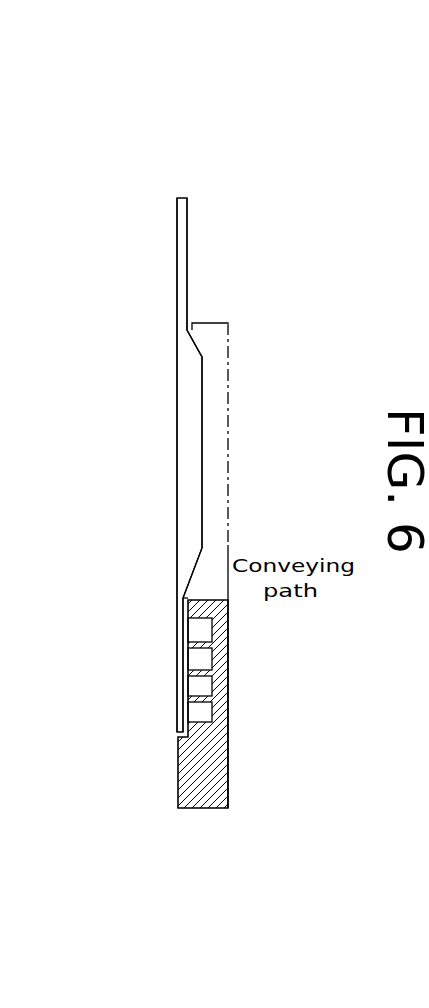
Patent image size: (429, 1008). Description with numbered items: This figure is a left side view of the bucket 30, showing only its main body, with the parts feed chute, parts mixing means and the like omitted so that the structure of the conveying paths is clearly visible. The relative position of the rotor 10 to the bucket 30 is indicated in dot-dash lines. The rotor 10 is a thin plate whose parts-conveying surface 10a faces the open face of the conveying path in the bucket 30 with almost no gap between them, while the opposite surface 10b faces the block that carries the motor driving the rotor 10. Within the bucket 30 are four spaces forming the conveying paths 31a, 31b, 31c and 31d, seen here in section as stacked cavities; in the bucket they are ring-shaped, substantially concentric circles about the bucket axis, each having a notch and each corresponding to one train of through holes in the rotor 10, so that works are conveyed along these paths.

The rotor 10 is at (177, 472).
The parts-conveying surface 10a is at (185, 277).
The surface opposite to the parts-conveying surface 10b is at (177, 270).
The bucket 30 is at (228, 549).
The conveying path 31a is at (192, 712).
The conveying path 31b is at (200, 684).
The conveying path 31c is at (200, 656).
The conveying path 31d is at (200, 630).